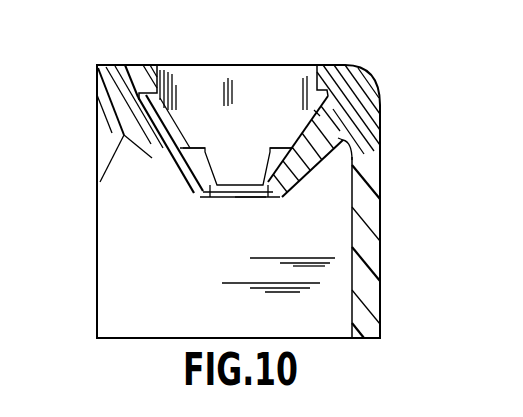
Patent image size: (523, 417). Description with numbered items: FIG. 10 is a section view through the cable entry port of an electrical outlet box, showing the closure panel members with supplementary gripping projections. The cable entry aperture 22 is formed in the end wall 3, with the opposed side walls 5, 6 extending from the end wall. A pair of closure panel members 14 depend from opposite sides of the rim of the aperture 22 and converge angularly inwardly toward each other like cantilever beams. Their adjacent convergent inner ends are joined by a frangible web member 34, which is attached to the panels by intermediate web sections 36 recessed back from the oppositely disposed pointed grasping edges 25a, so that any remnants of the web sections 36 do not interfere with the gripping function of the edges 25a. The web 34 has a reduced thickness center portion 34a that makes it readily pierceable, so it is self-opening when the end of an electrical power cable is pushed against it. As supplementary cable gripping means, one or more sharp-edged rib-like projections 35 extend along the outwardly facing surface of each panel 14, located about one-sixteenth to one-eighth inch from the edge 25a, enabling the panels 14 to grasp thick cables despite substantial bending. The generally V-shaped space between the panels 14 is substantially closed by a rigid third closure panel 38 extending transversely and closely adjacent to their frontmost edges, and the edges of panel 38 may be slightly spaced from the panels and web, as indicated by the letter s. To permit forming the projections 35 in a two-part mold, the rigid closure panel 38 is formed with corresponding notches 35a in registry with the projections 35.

The end wall 3 is at (268, 63).
The side wall 5 is at (316, 113).
The side wall 6 is at (373, 270).
The closure panel member 14 is at (152, 160).
The cable entry aperture 22 is at (182, 87).
The rib-like projection 25a is at (214, 199).
The frangible web member 34 is at (262, 199).
The reduced thickness center portion 34a is at (253, 199).
The rib-like projection 35 is at (268, 151).
The notch 35a is at (193, 147).
The intermediate web section 36 is at (193, 193).
The third closure panel 38 is at (265, 89).